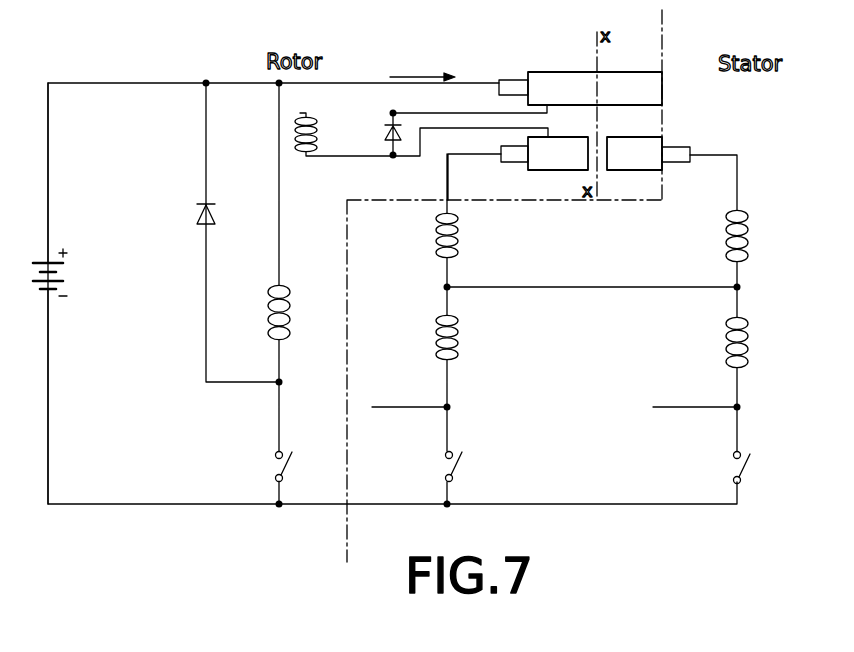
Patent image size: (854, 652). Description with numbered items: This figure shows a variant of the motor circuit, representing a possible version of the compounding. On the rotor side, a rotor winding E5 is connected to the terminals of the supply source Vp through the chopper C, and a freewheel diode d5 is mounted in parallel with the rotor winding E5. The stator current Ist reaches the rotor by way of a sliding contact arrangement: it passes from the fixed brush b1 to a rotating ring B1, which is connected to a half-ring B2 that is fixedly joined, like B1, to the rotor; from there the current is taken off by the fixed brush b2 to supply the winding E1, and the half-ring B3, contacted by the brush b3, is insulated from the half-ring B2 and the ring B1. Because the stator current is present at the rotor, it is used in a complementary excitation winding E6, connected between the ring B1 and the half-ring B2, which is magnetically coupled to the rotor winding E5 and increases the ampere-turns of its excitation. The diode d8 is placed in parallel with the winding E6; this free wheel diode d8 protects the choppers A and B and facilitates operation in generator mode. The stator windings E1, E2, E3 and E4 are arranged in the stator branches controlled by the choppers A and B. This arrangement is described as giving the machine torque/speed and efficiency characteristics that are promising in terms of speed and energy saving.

The supply source Vp is at (67, 293).
The freewheel diode d5 is at (189, 215).
The free wheel diode d8 is at (386, 136).
The winding E1 is at (462, 235).
The stator winding E2 is at (462, 337).
The stator winding E3 is at (752, 235).
The stator winding E4 is at (752, 342).
The rotor winding E5 is at (295, 312).
The complementary excitation winding E6 is at (321, 134).
The fixed brush b1 is at (515, 86).
The fixed brush b2 is at (510, 162).
The brush b3 is at (679, 156).
The rotating ring B1 is at (575, 82).
The half-ring B2 is at (556, 160).
The half-ring B3 is at (620, 156).
The chopper A is at (465, 467).
The chopper B is at (752, 468).
The chopper C is at (292, 467).
The stator current Ist is at (422, 65).